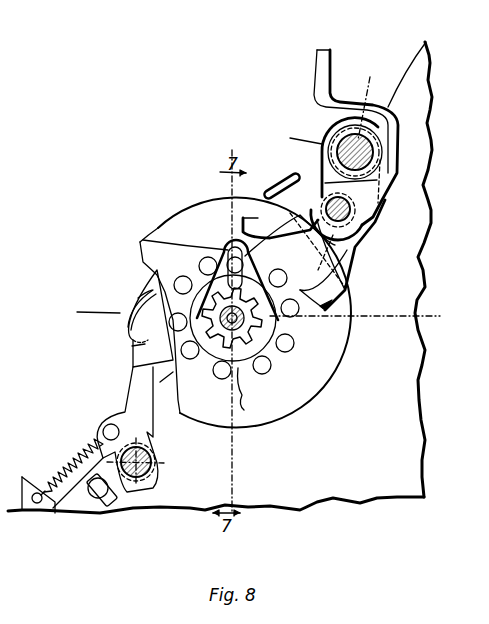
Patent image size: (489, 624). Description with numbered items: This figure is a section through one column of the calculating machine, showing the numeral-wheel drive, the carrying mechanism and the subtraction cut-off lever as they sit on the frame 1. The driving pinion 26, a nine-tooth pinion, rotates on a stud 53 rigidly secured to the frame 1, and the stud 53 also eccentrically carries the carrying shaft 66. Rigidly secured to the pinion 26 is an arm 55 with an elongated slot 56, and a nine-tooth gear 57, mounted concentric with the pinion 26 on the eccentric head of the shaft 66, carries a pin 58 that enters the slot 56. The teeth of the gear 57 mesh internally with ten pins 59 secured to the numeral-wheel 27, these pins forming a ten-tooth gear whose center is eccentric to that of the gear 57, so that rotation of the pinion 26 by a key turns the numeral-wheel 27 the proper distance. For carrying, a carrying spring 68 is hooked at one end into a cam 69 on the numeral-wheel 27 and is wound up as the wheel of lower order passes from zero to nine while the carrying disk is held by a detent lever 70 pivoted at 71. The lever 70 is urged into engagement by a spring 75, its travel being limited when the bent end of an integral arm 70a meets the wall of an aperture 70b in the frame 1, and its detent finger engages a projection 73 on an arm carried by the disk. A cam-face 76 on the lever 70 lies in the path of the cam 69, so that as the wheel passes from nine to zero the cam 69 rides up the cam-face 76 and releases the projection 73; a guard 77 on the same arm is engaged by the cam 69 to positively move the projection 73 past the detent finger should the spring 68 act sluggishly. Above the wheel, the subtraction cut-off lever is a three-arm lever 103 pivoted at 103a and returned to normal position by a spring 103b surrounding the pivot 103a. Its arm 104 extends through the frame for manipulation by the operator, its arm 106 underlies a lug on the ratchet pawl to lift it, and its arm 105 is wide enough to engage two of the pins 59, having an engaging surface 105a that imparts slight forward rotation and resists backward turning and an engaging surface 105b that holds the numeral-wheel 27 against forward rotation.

The frame 1 is at (220, 277).
The driving pinion 26 is at (280, 328).
The numeral-wheel 27 is at (290, 402).
The stud 53 is at (203, 363).
The arm 55 is at (210, 273).
The elongated slot 56 is at (226, 252).
The gear 57 is at (252, 397).
The pin 58 is at (242, 266).
The pins 59 is at (270, 368).
The carrying shaft 66 is at (234, 314).
The carrying spring 68 is at (138, 298).
The cam 69 is at (132, 346).
The detent lever 70 is at (105, 437).
The arm 70a is at (107, 512).
The aperture 70b is at (93, 496).
The pivot 71 is at (164, 463).
The projection 73 is at (151, 318).
The spring 75 is at (65, 460).
The cam-face 76 is at (122, 320).
The guard 77 is at (145, 325).
The three-arm lever 103 is at (370, 183).
The pivot 103a is at (370, 217).
The spring 103b is at (390, 203).
The arm 104 is at (323, 78).
The arm 105 is at (347, 250).
The engaging surface 105a is at (333, 283).
The engaging surface 105b is at (320, 307).
The arm 106 is at (258, 228).